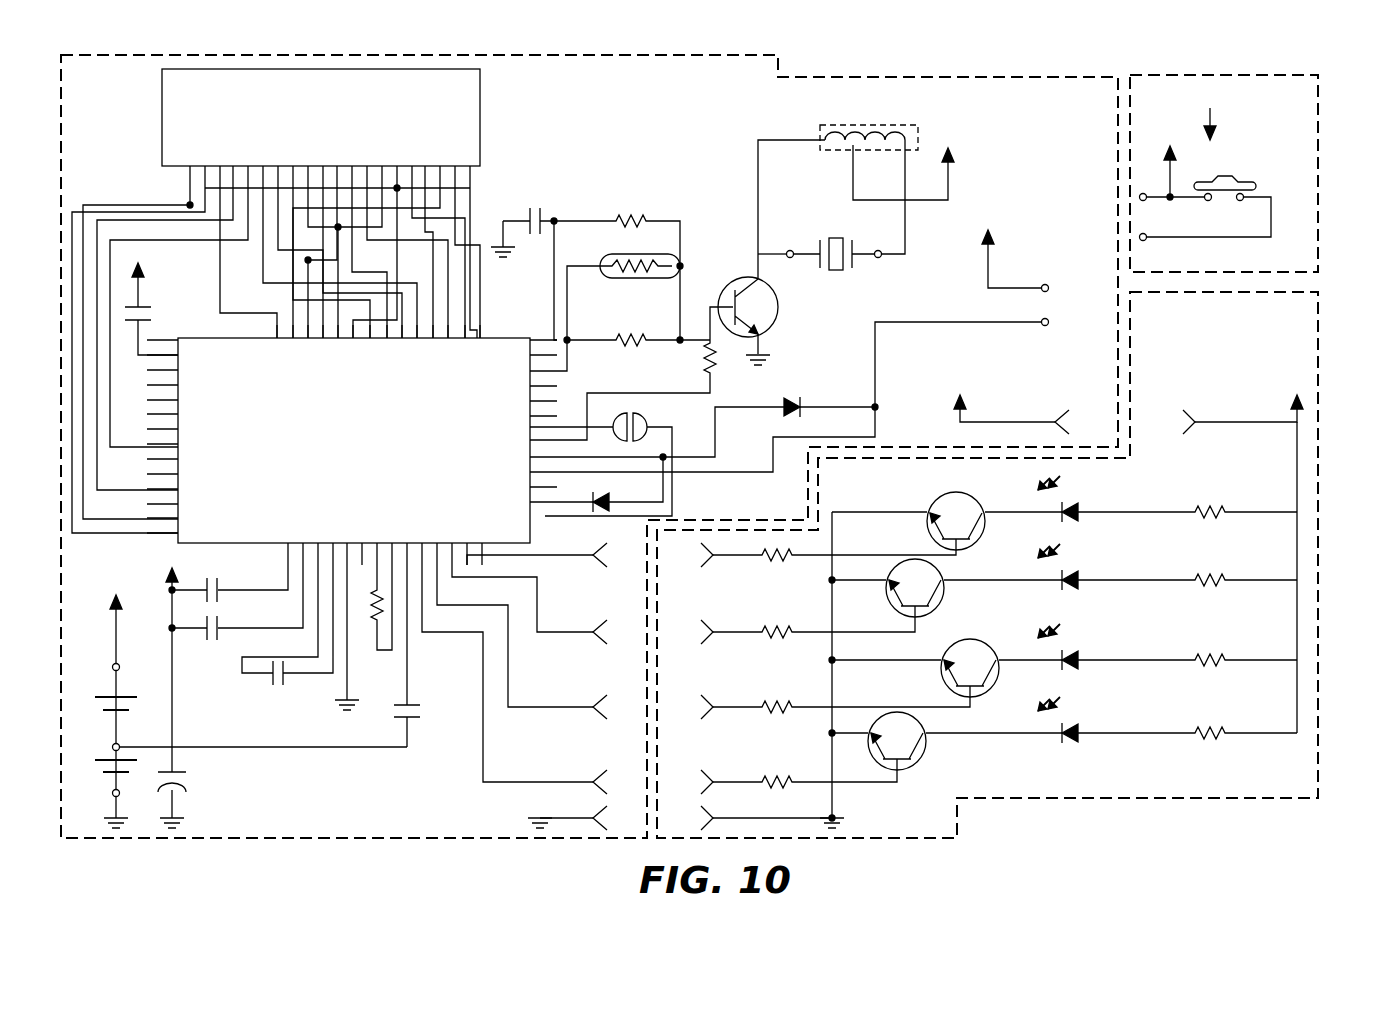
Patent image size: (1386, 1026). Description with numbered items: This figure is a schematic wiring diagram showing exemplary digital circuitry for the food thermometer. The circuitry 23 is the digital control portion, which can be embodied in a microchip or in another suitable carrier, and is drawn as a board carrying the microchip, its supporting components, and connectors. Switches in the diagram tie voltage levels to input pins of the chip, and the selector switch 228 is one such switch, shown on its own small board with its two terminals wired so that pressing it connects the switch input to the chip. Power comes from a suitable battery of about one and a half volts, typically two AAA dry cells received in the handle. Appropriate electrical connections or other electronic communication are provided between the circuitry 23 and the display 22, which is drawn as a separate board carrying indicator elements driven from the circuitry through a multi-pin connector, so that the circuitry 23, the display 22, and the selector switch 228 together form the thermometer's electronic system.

The circuitry 23 is at (353, 846).
The display 22 is at (1043, 806).
The selector switch 228 is at (1252, 156).